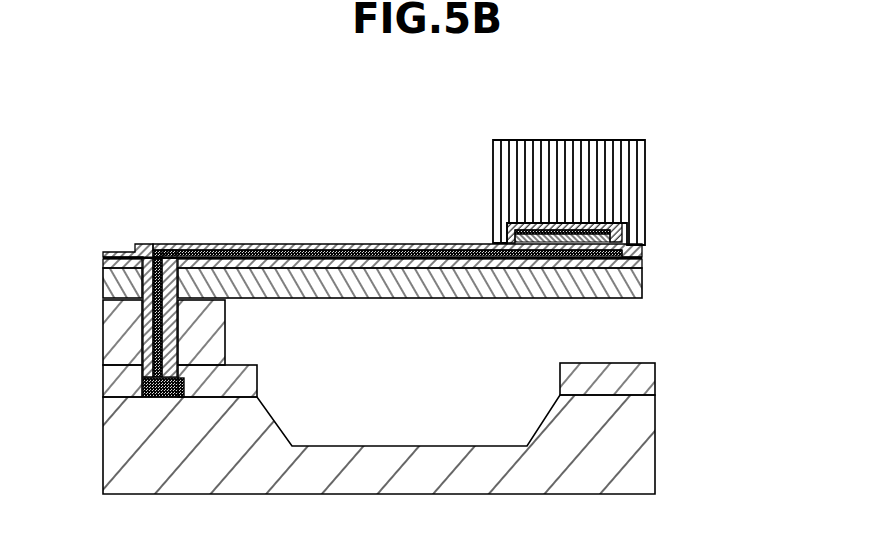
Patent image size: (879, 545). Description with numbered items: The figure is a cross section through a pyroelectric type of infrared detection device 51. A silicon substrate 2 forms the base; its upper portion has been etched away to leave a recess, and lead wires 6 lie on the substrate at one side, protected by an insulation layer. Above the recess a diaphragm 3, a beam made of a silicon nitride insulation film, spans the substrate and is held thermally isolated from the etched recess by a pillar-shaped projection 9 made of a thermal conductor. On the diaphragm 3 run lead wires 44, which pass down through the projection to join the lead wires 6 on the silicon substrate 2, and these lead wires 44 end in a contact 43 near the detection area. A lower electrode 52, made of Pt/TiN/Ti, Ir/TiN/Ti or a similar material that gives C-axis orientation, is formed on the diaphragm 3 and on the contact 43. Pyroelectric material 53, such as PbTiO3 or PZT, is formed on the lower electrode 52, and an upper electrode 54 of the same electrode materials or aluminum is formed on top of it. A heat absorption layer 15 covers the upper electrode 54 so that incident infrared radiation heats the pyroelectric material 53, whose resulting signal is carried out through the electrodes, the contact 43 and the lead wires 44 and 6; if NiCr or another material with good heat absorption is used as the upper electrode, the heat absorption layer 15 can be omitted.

The silicon substrate 2 is at (656, 438).
The diaphragm 3 is at (623, 282).
The lead wires 6 is at (143, 389).
The pillar-shaped projection 9 is at (103, 328).
The heat absorption layer 15 is at (575, 165).
The contact 43 is at (618, 230).
The lead wires 44 is at (277, 246).
The infrared detection device 51 is at (748, 238).
The lower electrode 52 is at (642, 254).
The pyroelectric material 53 is at (514, 240).
The upper electrode 54 is at (527, 231).